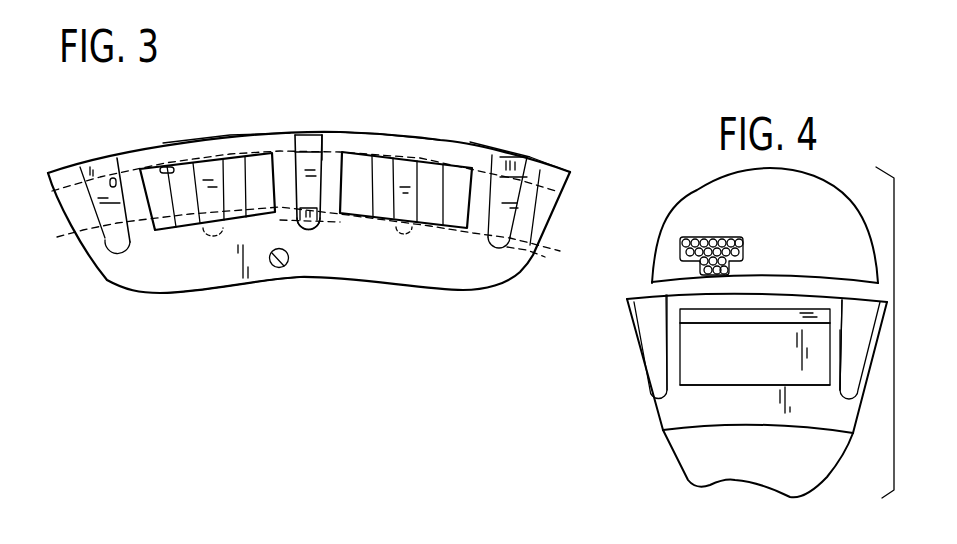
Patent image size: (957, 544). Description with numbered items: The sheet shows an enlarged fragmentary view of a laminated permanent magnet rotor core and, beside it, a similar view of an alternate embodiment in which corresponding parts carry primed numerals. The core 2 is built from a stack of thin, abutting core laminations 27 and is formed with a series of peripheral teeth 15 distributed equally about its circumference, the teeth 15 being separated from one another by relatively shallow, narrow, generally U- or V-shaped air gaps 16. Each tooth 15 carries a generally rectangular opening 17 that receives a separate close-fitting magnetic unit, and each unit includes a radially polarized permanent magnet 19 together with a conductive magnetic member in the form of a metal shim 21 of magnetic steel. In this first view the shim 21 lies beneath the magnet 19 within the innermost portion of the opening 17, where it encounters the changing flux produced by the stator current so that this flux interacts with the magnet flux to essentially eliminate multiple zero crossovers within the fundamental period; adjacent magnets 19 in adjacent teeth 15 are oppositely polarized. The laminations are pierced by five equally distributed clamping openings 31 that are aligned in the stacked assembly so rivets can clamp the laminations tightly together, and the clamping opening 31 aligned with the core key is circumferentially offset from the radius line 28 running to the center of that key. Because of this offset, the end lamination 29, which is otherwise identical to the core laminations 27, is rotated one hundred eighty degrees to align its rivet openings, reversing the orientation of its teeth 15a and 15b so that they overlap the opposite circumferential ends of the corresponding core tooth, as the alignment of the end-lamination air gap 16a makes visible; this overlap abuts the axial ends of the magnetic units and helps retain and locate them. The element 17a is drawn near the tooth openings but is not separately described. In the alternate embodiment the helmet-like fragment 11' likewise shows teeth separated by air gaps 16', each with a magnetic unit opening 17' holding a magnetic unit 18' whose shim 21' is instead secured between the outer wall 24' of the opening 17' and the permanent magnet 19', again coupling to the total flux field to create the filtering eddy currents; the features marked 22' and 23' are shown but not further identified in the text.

In FIG. 3, the core 2 is at (403, 270).
In FIG. 3, the peripheral tooth 15 is at (314, 152).
In FIG. 3, the tooth of end lamination 15a is at (240, 142).
In FIG. 3, the end tooth of end lamination 15b is at (357, 135).
In FIG. 3, the air gap 16 is at (306, 156).
In FIG. 3, the air gap of end lamination 16a is at (309, 150).
In FIG. 3, the opening 17 is at (287, 195).
In FIG. 3, the rib tab 17a is at (165, 166).
In FIG. 3, the permanent magnet 19 is at (304, 210).
In FIG. 3, the metal shim 21 is at (288, 275).
In FIG. 3, the core lamination 27 is at (492, 158).
In FIG. 3, the radius line 28 is at (322, 148).
In FIG. 3, the end lamination 29 is at (148, 277).
In FIG. 3, the clamping opening 31 is at (285, 270).
In FIG. 4, the protective helmet 11' is at (760, 335).
In FIG. 4, the air gap 16' is at (751, 380).
In FIG. 4, the magnetic unit opening 17' is at (837, 381).
In FIG. 4, the magnetic unit 18' is at (722, 430).
In FIG. 4, the permanent magnet 19' is at (755, 361).
In FIG. 4, the shim 21' is at (755, 347).
In FIG. 4, the ventilation grille 22' is at (684, 252).
In FIG. 4, the vertical rib 23' is at (756, 305).
In FIG. 4, the outer wall 24' is at (755, 267).